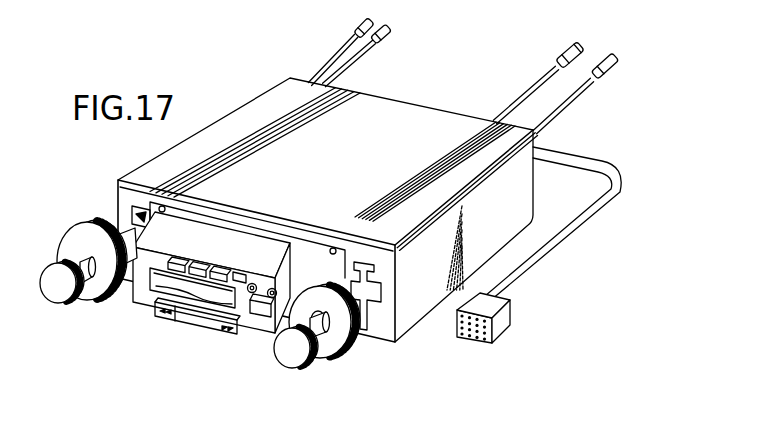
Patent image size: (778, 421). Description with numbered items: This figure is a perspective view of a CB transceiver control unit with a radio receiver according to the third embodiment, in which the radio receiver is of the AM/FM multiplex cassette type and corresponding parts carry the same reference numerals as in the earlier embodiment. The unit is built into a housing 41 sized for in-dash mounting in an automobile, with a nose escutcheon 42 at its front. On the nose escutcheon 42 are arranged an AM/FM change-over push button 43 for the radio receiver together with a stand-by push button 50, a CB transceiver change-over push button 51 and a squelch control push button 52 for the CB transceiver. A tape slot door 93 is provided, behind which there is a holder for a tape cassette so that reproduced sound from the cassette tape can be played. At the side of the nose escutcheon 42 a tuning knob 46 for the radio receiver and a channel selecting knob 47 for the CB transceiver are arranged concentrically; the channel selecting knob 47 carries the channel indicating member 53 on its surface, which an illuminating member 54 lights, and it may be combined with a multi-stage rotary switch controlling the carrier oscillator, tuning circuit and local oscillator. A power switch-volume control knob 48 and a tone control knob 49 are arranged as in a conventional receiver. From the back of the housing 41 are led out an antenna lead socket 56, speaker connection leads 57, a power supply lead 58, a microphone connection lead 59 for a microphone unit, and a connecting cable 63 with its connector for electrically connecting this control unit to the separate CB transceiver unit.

The housing 41 is at (232, 124).
The nose escutcheon 42 is at (228, 233).
The AM/FM change-over push button 43 is at (181, 262).
The tuning knob 46 is at (278, 352).
The channel selecting knob 47 is at (335, 354).
The power switch-volume control knob 48 is at (45, 281).
The tone control knob 49 is at (77, 233).
The stand-by push button 50 is at (199, 268).
The CB transceiver change-over push button 51 is at (228, 270).
The squelch control push button 52 is at (240, 272).
The channel indicating member 53 is at (352, 347).
The illuminating member 54 is at (298, 255).
The antenna lead socket 56 is at (568, 52).
The speaker connection lead 57 is at (368, 53).
The power supply lead 58 is at (342, 55).
The microphone connection lead 59 is at (617, 67).
The connecting cable 63 is at (552, 250).
The tape slot door 93 is at (202, 286).